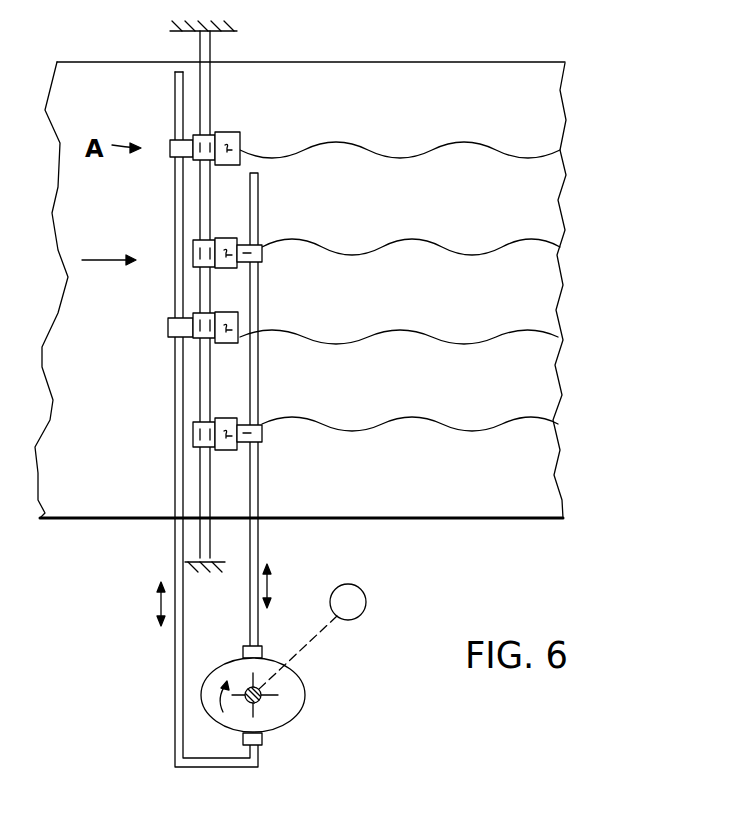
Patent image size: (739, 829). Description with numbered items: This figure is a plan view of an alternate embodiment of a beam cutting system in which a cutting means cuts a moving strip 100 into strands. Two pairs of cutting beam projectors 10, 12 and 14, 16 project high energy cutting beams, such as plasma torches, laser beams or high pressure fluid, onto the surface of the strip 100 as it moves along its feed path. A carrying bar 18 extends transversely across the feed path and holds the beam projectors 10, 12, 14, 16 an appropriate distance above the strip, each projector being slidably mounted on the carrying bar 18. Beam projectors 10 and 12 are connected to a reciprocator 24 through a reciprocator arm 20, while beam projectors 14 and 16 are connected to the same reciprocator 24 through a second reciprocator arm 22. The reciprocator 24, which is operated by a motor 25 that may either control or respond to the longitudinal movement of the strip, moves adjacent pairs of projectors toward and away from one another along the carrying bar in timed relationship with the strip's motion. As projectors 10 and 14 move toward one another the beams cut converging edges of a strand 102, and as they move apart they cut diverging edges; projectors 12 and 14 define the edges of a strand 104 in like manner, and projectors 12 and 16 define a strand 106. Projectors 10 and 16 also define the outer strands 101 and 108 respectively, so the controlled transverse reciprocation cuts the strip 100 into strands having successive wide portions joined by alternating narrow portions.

The strip 100 is at (88, 70).
The outer strand 101 is at (547, 100).
The strand 102 is at (547, 197).
The strand 104 is at (540, 290).
The strand 106 is at (545, 370).
The outer strand 108 is at (550, 463).
The carrying bar 18 is at (205, 50).
The reciprocator arm 20 is at (176, 490).
The reciprocator arm 22 is at (258, 495).
The cutting beam projector 10 is at (235, 134).
The cutting beam projector 12 is at (222, 311).
The cutting beam projector 14 is at (225, 237).
The cutting beam projector 16 is at (221, 417).
The reciprocator 24 is at (290, 707).
The motor 25 is at (362, 593).